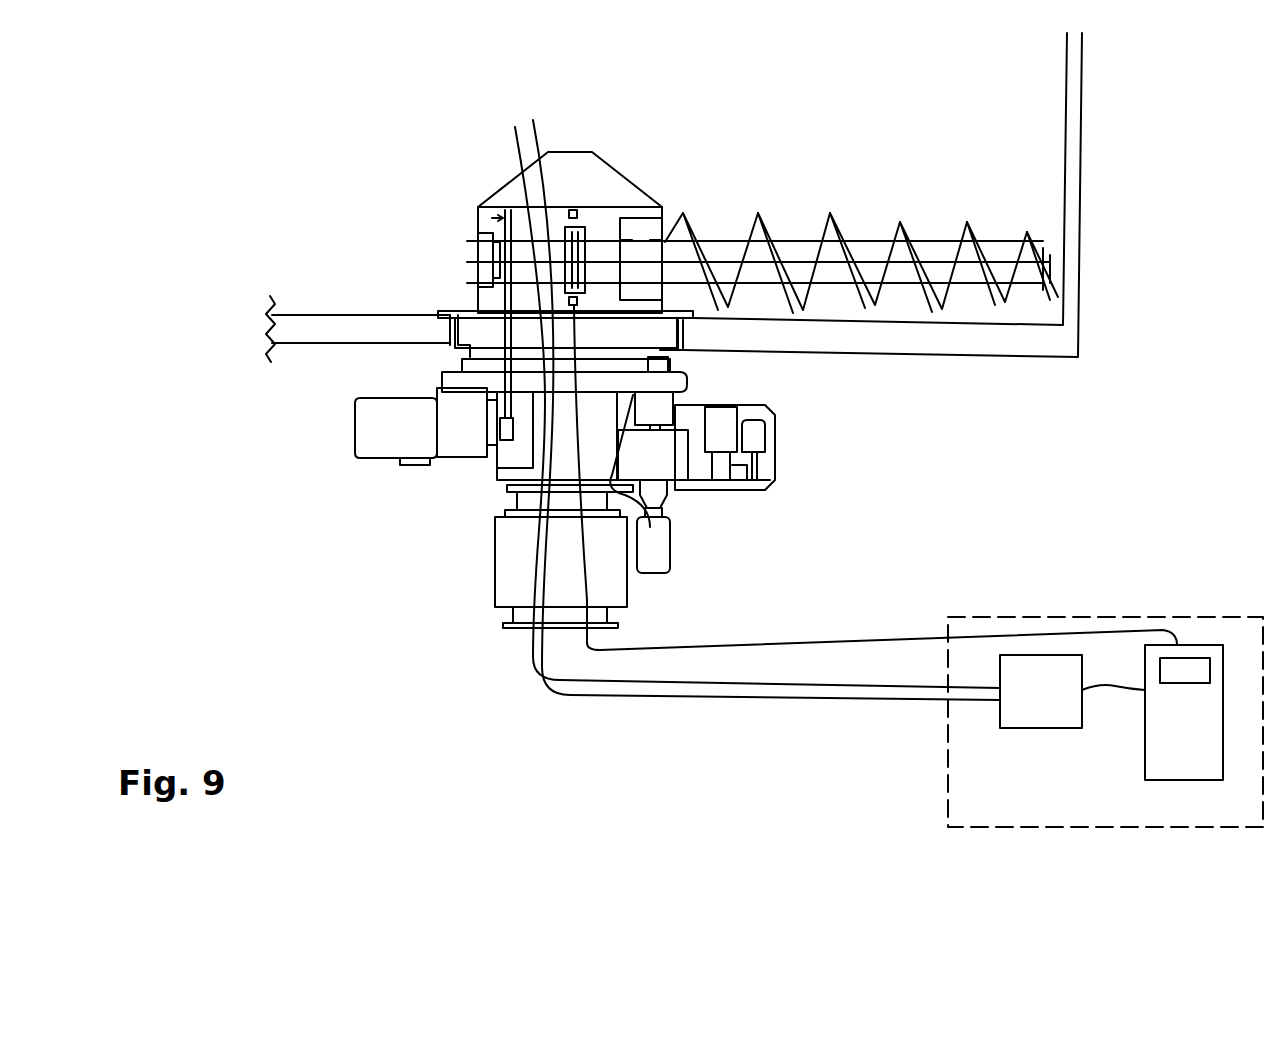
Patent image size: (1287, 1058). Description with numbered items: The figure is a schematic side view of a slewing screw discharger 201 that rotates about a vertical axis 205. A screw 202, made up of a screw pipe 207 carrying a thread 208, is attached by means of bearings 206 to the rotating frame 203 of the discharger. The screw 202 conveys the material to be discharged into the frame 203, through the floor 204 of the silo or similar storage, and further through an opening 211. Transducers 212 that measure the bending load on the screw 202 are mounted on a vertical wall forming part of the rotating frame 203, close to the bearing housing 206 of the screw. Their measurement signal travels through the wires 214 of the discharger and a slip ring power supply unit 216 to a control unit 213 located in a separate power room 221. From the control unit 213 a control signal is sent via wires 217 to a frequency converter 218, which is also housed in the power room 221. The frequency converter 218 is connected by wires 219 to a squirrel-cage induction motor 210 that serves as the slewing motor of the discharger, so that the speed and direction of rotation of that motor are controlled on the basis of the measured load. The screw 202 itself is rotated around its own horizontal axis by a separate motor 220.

The screw discharger 201 is at (426, 149).
The screw 202 is at (875, 252).
The frame 203 is at (602, 170).
The floor 204 is at (320, 315).
The vertical axis 205 is at (572, 207).
The bearings 206 is at (480, 253).
The screw pipe 207 is at (945, 252).
The thread 208 is at (1027, 232).
The squirrel-cage induction motor 210 is at (655, 547).
The opening 211 is at (523, 628).
The transducers 212 is at (740, 392).
The control unit 213 is at (1027, 710).
The wires 214 is at (798, 680).
The slip ring power supply unit 216 is at (507, 557).
The wires 217 is at (1107, 690).
The frequency converter 218 is at (1170, 760).
The wires 219 is at (847, 642).
The motor 220 is at (365, 430).
The power room 221 is at (1030, 615).